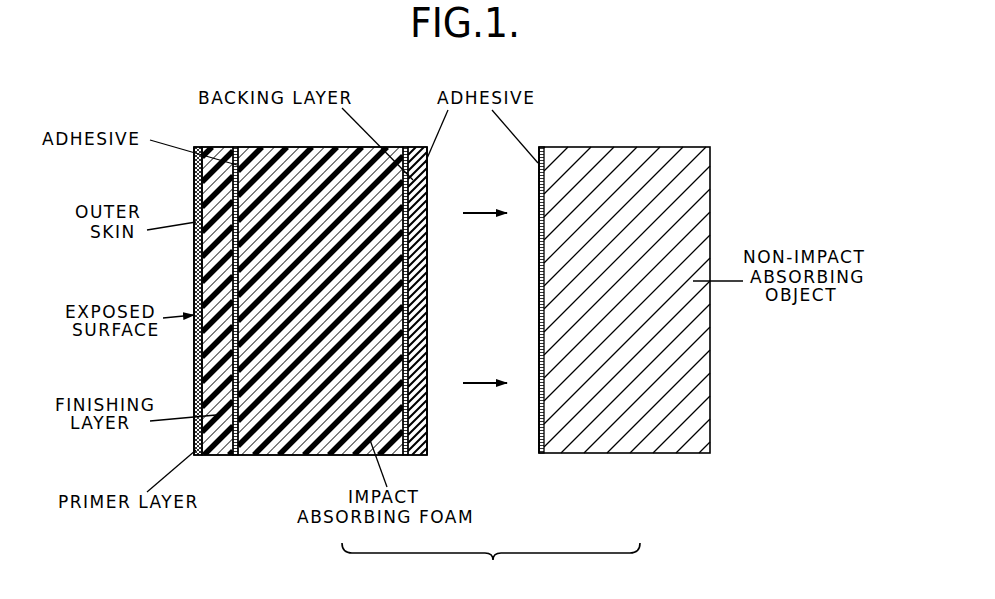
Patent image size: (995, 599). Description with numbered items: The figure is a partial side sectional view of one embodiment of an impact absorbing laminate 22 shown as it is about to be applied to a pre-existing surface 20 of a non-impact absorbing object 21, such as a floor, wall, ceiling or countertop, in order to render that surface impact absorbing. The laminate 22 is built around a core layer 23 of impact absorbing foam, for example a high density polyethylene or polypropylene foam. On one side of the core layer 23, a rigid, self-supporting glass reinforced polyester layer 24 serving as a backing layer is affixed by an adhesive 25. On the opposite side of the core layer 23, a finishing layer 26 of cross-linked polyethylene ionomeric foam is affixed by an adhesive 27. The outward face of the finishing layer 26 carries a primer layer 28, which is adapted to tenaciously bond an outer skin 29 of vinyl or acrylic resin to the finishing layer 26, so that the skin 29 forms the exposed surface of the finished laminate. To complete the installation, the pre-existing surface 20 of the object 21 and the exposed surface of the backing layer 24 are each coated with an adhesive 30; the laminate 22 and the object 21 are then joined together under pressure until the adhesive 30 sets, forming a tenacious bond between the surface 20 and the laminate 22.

The pre-existing surface 20 is at (545, 428).
The non-impact absorbing object 21 is at (690, 357).
The laminate 22 is at (192, 262).
The core layer 23 is at (302, 158).
The glass reinforced polyester layer 24 is at (418, 416).
The adhesive 25 is at (406, 160).
The finishing layer 26 is at (220, 186).
The adhesive 27 is at (236, 437).
The primer layer 28 is at (205, 452).
The outer skin 29 is at (196, 356).
The adhesive 30 is at (427, 283).